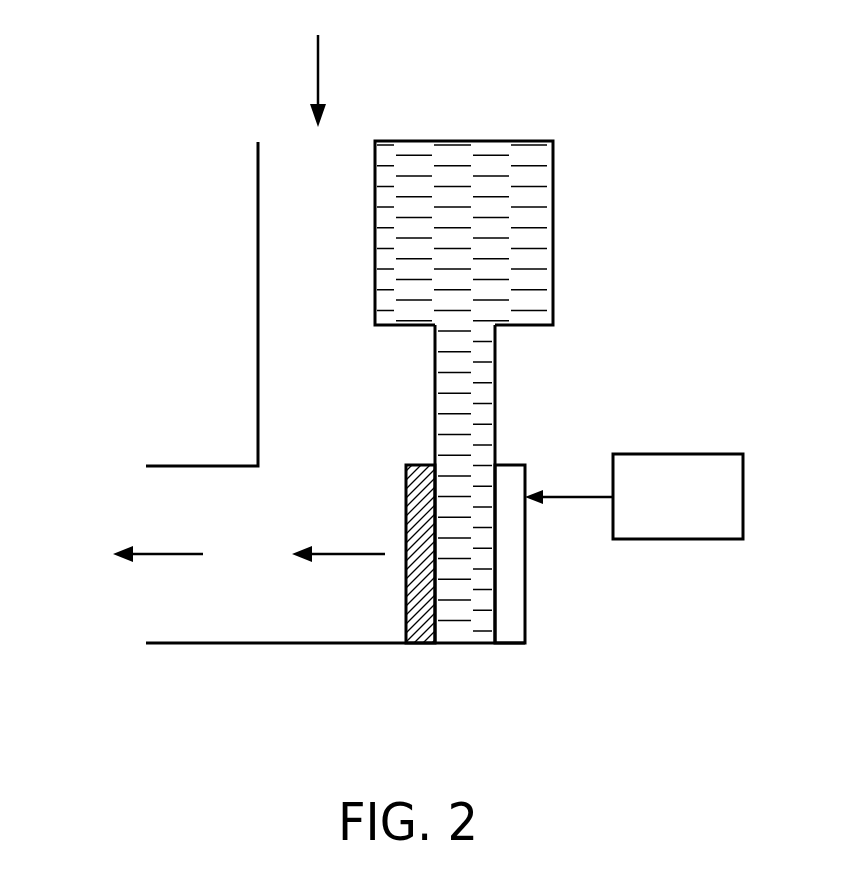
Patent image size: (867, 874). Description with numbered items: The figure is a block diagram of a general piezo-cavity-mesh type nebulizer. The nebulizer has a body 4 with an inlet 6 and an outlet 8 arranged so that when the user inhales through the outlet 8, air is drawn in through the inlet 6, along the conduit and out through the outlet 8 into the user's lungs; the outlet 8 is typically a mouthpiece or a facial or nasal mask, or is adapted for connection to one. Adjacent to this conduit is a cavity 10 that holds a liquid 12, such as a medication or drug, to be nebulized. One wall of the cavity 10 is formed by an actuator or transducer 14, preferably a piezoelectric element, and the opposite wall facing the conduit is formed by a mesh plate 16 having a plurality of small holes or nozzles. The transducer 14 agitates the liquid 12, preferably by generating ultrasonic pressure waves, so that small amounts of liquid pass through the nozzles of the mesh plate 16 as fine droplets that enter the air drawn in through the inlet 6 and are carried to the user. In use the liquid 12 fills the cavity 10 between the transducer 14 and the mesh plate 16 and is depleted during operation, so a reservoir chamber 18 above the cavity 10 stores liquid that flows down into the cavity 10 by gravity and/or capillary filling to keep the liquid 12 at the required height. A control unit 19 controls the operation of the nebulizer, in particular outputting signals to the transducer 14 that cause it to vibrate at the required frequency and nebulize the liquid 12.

The body 4 is at (258, 295).
The inlet 6 is at (280, 152).
The outlet 8 is at (162, 613).
The cavity 10 is at (465, 645).
The liquid 12 is at (547, 262).
The transducer 14 is at (525, 598).
The mesh plate 16 is at (419, 645).
The reservoir chamber 18 is at (553, 180).
The control unit 19 is at (677, 540).